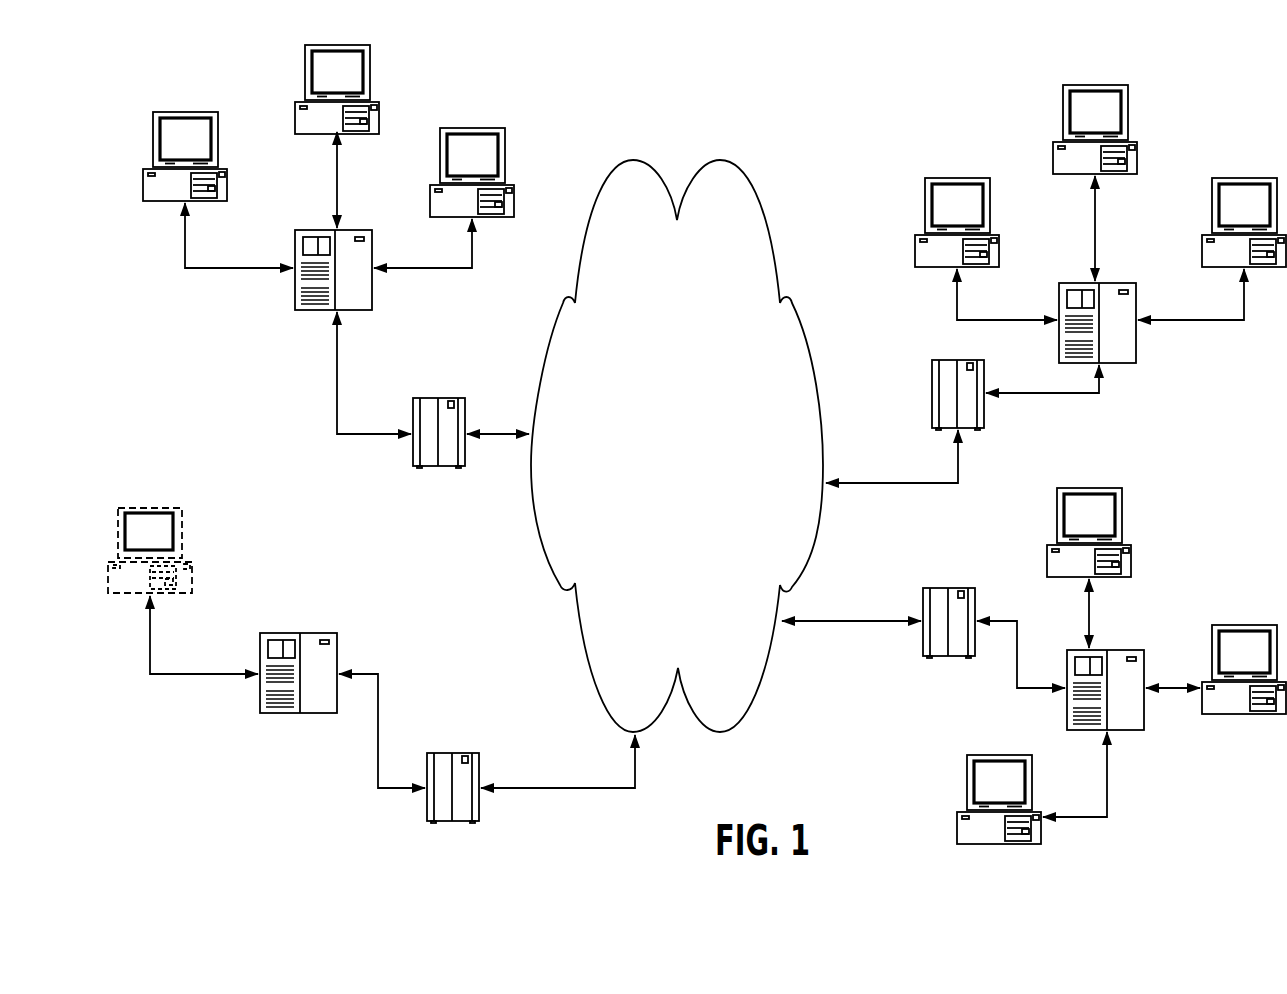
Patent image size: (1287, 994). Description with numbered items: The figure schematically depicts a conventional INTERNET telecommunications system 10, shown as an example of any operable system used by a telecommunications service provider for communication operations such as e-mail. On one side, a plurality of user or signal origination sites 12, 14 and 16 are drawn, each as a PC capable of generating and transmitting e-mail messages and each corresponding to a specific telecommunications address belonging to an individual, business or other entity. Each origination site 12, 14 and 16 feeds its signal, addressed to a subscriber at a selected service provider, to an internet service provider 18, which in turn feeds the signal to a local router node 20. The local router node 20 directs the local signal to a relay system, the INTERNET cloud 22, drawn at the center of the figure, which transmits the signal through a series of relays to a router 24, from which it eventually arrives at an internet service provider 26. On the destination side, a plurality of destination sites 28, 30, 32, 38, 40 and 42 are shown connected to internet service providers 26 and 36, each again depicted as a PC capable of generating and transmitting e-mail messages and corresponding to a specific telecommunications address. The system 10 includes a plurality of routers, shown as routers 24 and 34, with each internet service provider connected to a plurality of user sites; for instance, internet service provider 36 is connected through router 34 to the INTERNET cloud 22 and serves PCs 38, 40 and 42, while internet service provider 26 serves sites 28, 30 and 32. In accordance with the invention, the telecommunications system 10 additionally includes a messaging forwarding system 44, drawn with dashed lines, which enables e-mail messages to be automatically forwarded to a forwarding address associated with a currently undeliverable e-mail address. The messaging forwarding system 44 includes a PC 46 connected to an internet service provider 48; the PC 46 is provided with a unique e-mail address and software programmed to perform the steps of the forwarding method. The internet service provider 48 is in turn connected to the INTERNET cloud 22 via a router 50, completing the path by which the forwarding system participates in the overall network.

The telecommunications system 10 is at (740, 112).
The signal origination site 12 is at (193, 110).
The signal origination site 14 is at (372, 74).
The signal origination site 16 is at (476, 128).
The internet service provider 18 is at (320, 306).
The local router node 20 is at (465, 418).
The INTERNET cloud 22 is at (768, 233).
The router 24 is at (950, 362).
The internet service provider 26 is at (1110, 343).
The destination site 28 is at (957, 178).
The destination site 30 is at (1105, 85).
The destination site 32 is at (1258, 178).
The router 34 is at (968, 605).
The internet service provider 36 is at (1120, 705).
The destination site 38 is at (1063, 500).
The destination site 40 is at (1225, 628).
The destination site 42 is at (972, 758).
The messaging forwarding system 44 is at (168, 522).
The PC 46 is at (188, 582).
The internet service provider 48 is at (322, 652).
The router 50 is at (445, 765).